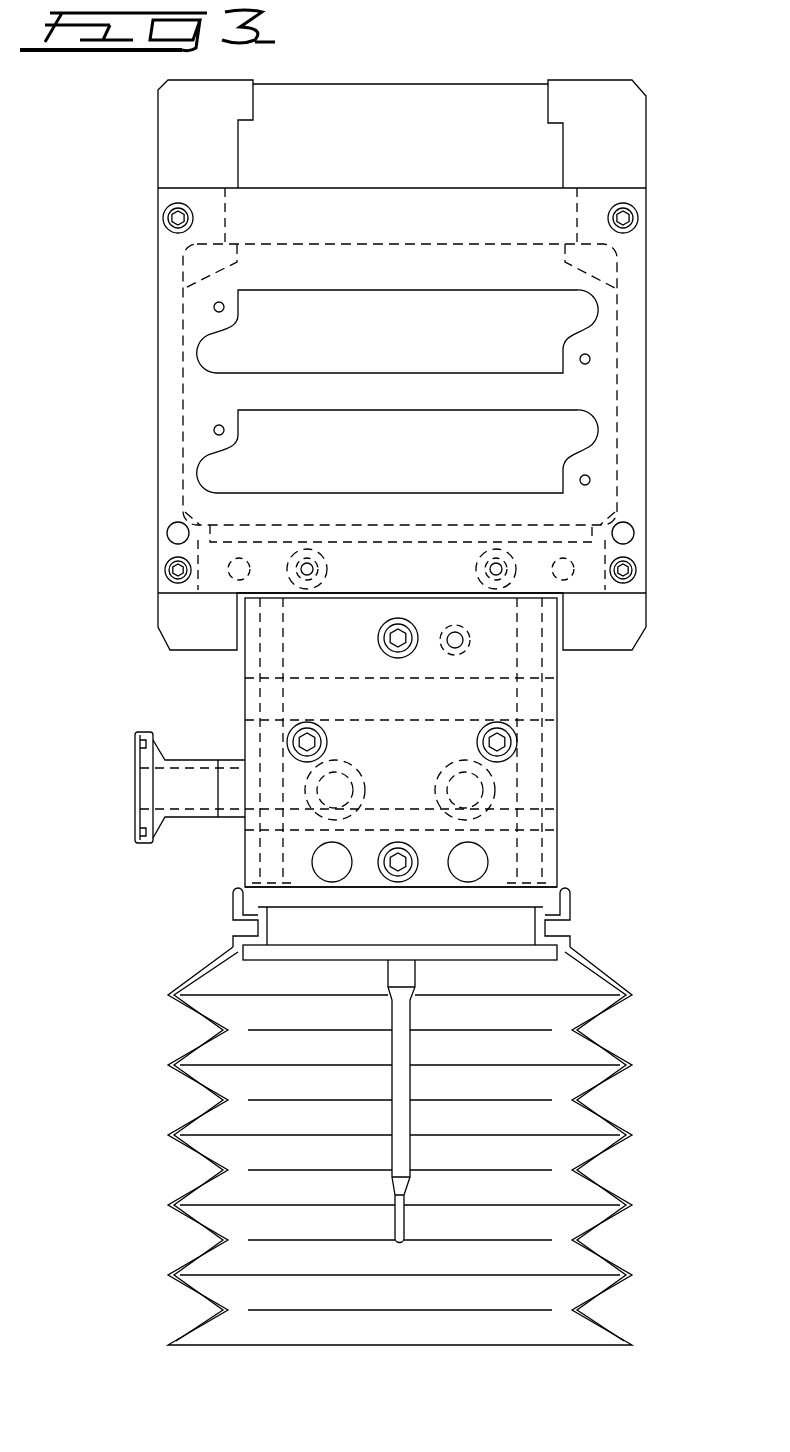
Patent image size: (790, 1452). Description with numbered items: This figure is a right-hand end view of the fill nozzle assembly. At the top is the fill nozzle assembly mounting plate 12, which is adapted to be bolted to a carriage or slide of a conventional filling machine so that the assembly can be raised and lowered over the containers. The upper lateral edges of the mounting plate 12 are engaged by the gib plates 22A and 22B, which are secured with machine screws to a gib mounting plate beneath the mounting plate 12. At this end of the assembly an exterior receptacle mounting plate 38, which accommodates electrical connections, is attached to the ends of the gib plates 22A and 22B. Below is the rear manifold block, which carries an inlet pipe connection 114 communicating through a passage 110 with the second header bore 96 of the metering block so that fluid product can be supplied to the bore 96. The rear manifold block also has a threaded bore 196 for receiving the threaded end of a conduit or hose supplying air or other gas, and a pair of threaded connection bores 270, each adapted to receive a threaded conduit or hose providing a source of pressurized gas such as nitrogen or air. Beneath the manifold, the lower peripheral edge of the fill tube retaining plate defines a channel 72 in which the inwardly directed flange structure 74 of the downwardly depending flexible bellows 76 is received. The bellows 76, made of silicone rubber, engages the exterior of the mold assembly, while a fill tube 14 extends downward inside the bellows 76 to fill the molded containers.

The fill nozzle assembly mounting plate 12 is at (448, 100).
The gib plate 22A is at (623, 152).
The gib plate 22B is at (176, 156).
The exterior receptacle mounting plate 38 is at (633, 251).
The threaded bore 196 is at (451, 647).
The passage 110 is at (403, 784).
The second header bore 96 is at (478, 798).
The threaded connection bores 270 is at (332, 882).
The inlet pipe connection 114 is at (148, 734).
The channel 72 is at (556, 930).
The flange structure 74 is at (548, 921).
The bellows 76 is at (592, 972).
The fill nozzles or tubes 14 is at (416, 1082).